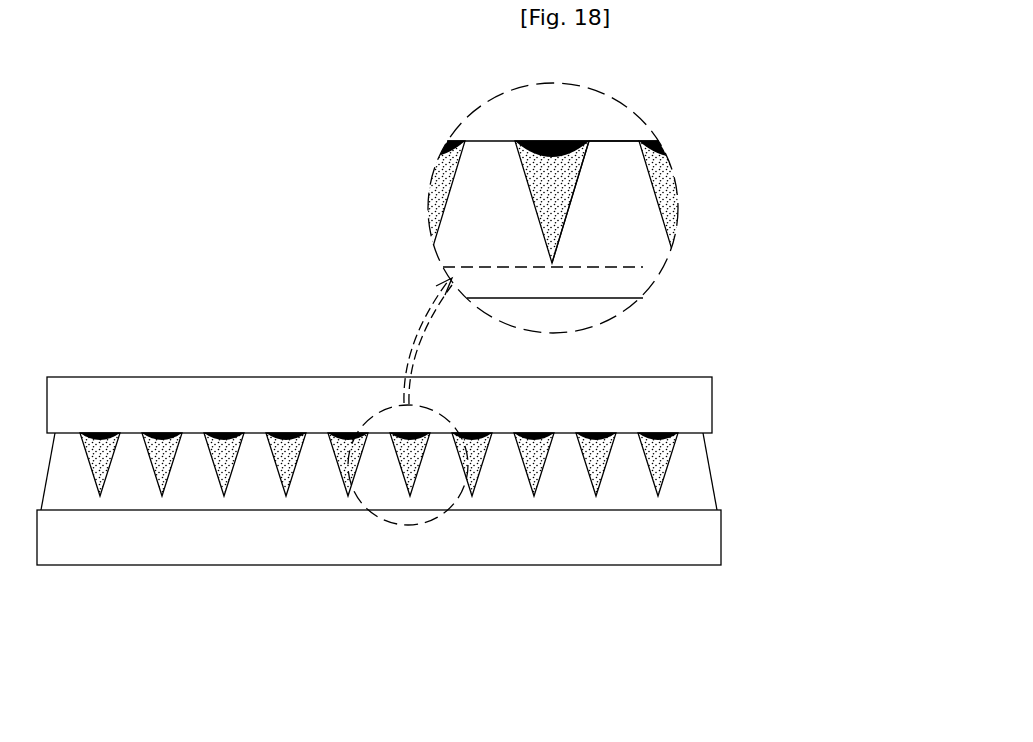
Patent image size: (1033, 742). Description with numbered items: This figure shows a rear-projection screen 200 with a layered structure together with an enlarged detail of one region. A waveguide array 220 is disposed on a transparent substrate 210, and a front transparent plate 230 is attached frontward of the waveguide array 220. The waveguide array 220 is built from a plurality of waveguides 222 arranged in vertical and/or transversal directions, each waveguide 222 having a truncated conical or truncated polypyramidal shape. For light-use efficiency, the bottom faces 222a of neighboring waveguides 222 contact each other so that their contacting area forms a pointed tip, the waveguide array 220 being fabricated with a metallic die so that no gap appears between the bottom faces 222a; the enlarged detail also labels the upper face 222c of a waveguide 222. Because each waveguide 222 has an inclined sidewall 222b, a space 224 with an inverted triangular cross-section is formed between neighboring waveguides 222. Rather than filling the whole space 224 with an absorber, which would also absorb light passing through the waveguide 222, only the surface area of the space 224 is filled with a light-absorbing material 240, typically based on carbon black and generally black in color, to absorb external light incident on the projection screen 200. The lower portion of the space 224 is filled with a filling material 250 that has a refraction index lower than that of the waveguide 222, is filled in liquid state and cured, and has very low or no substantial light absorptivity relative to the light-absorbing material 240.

The projection screen 200 is at (97, 356).
The transparent substrate 210 is at (720, 540).
The waveguide array 220 is at (717, 478).
The waveguide 222 is at (645, 198).
The bottom face 222a is at (643, 268).
The inclined sidewall 222b is at (572, 207).
The top surface of prism pattern 222c is at (612, 140).
The space 224 is at (545, 465).
The upper substrate 230 is at (707, 402).
The light-absorbing material 240 is at (165, 431).
The filling material 250 is at (172, 450).